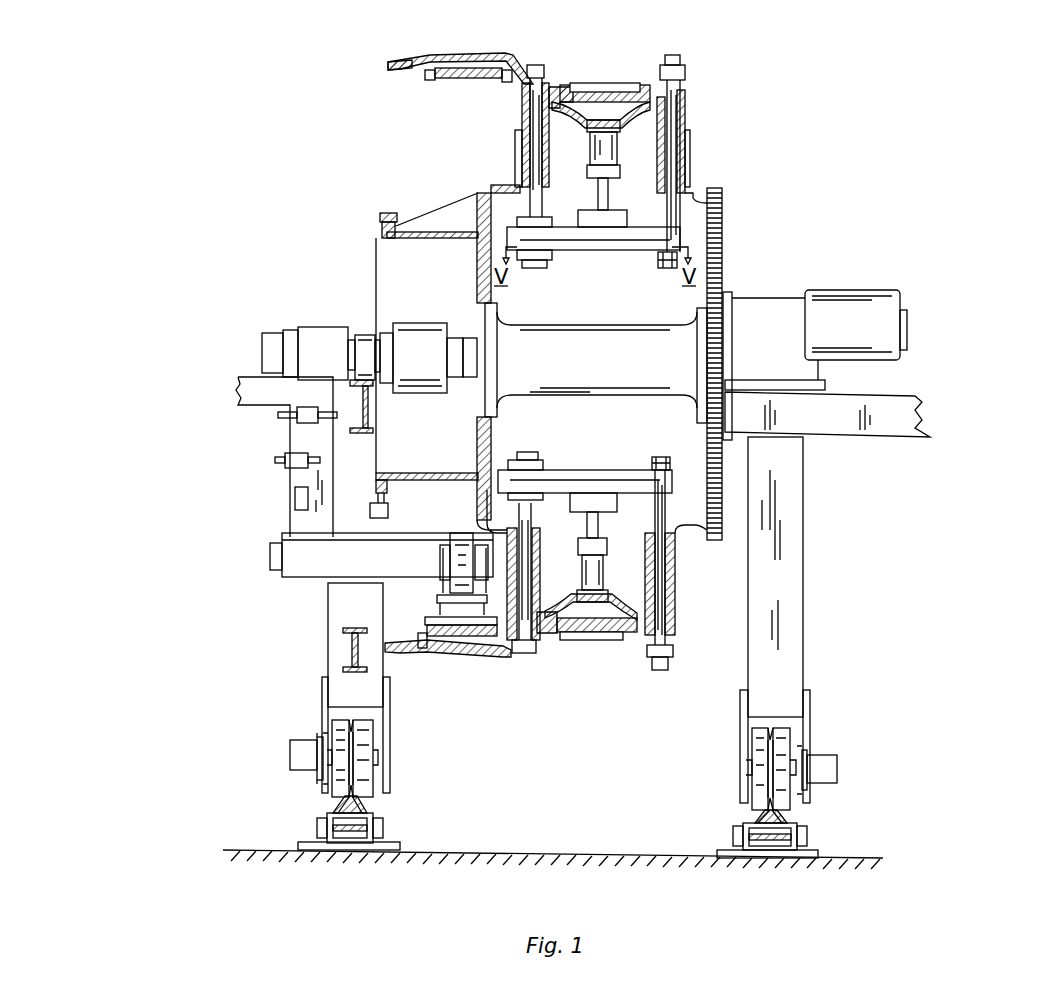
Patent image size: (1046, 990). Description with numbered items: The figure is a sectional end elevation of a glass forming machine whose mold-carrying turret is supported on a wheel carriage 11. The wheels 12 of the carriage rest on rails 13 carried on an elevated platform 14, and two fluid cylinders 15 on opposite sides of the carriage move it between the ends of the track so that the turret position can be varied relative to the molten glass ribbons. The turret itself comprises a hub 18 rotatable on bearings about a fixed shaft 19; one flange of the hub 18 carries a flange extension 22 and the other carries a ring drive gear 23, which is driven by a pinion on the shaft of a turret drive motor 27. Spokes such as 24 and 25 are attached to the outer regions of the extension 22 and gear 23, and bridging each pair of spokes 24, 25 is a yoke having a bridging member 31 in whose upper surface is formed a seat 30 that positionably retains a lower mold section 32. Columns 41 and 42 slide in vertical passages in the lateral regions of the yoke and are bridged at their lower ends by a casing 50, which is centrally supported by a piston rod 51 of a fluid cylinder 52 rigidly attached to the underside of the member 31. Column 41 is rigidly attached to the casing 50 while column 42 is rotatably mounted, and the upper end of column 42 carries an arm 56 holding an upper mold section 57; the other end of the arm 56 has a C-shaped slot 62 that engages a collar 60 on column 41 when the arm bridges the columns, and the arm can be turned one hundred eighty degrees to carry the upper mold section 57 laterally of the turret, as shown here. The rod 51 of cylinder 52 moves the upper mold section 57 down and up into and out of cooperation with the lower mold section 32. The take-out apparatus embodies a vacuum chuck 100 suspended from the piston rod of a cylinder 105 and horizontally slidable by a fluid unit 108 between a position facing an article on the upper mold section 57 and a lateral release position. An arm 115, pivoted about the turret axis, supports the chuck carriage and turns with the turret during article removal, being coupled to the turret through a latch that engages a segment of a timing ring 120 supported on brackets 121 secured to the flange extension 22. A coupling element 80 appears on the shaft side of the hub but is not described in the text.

The wheel carriage 11 is at (330, 607).
The wheels 12 is at (334, 725).
The rails 13 is at (330, 805).
The elevated platform 14 is at (305, 843).
The fluid cylinders 15 is at (290, 752).
The hub 18 is at (566, 325).
The fixed shaft 19 is at (262, 350).
The flange extension 22 is at (478, 272).
The ring drive gear 23 is at (715, 535).
The spoke 24 is at (515, 160).
The spoke 25 is at (687, 160).
The turret drive motor 27 is at (855, 292).
The seat 30 is at (645, 84).
The bridging member 31 is at (623, 118).
The lower mold section 32 is at (562, 84).
The column 41 is at (682, 101).
The column 42 is at (546, 197).
The casing 50 is at (597, 250).
The piston rod 51 is at (610, 197).
The fluid cylinder 52 is at (590, 149).
The arm 56 is at (428, 55).
The upper mold section 57 is at (458, 80).
The collar 60 is at (683, 66).
The C-shaped slot 62 is at (400, 69).
The coupling 80 is at (395, 323).
The vacuum chuck 100 is at (420, 640).
The cylinder 105 is at (458, 545).
The fluid unit 108 is at (270, 563).
The arm 115 is at (290, 435).
The timing ring 120 is at (378, 222).
The brackets 121 is at (436, 214).